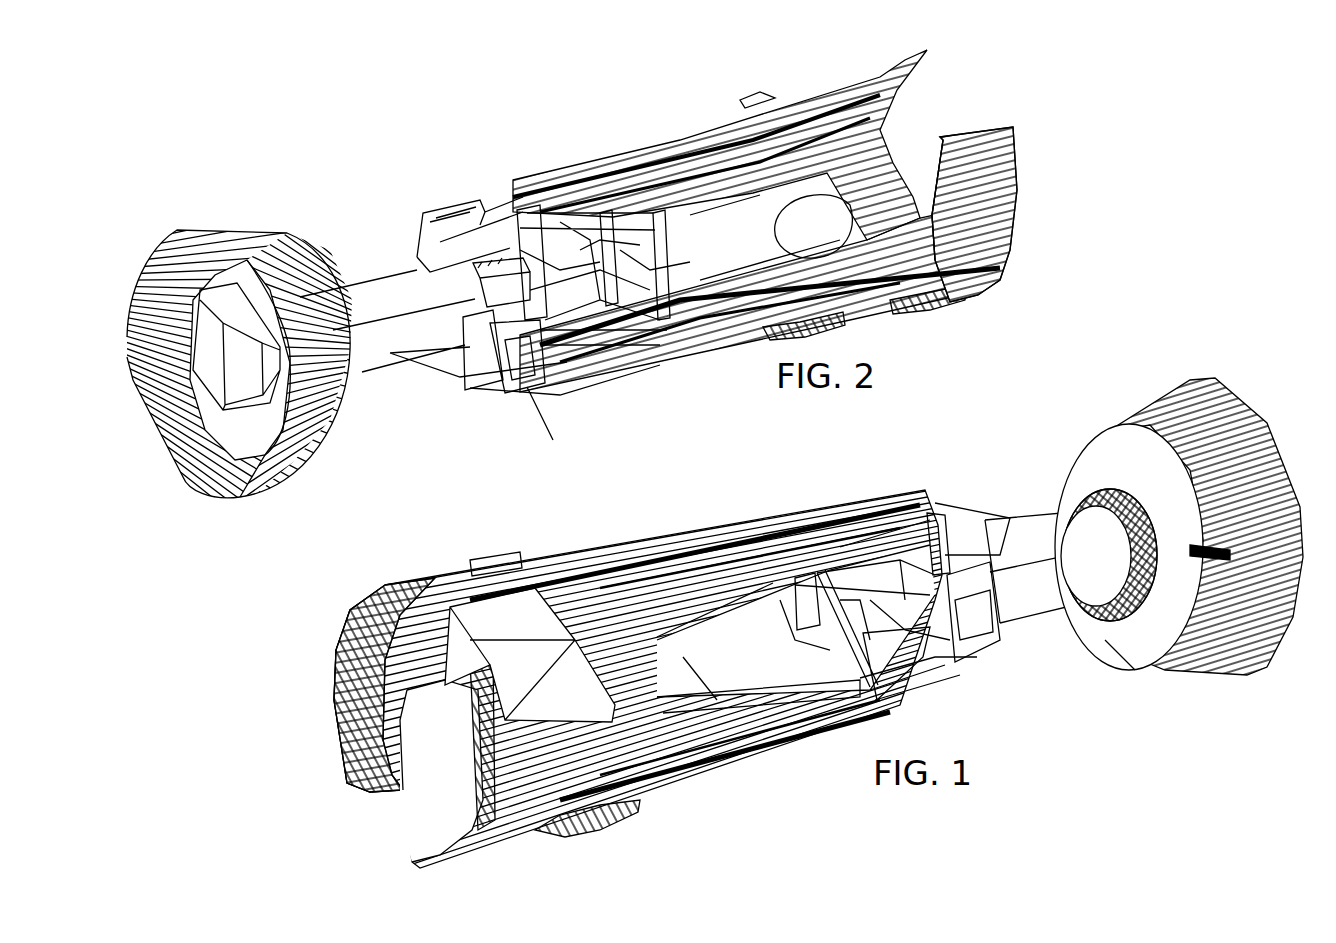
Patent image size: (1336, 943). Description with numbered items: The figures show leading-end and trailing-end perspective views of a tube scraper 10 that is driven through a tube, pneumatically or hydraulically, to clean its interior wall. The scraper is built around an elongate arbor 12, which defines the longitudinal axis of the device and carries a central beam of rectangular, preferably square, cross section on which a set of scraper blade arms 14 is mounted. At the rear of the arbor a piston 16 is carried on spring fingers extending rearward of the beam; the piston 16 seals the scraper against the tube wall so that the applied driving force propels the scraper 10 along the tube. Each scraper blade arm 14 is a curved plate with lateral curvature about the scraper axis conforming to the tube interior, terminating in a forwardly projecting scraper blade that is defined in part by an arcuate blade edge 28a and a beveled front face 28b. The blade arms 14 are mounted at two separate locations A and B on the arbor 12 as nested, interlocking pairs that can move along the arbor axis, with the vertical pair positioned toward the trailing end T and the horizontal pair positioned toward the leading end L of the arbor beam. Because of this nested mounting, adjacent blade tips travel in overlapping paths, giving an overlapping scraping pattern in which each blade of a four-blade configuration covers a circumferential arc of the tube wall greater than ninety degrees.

In FIG. 2, the tube scraper 10 is at (582, 341).
In FIG. 2, the elongate arbor 12 is at (373, 263).
In FIG. 1, the elongate arbor 12 is at (1023, 633).
In FIG. 2, the scraper blade arms 14 is at (808, 219).
In FIG. 1, the scraper blade arms 14 is at (788, 586).
In FIG. 1, the piston 16 is at (1080, 428).
In FIG. 2, the arcuate blade edge 28a is at (1000, 129).
In FIG. 1, the arcuate blade edge 28a is at (440, 576).
In FIG. 2, the beveled front face 28b is at (1010, 190).
In FIG. 1, the beveled front face 28b is at (497, 560).
In FIG. 2, the mounting location A is at (472, 189).
In FIG. 2, the mounting location B is at (580, 240).
In FIG. 2, the trailing end T is at (225, 222).
In FIG. 1, the trailing end T is at (1036, 444).
In FIG. 2, the leading end L is at (882, 5).
In FIG. 1, the leading end L is at (600, 548).